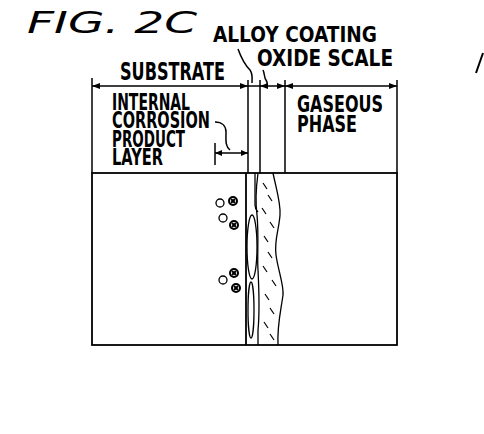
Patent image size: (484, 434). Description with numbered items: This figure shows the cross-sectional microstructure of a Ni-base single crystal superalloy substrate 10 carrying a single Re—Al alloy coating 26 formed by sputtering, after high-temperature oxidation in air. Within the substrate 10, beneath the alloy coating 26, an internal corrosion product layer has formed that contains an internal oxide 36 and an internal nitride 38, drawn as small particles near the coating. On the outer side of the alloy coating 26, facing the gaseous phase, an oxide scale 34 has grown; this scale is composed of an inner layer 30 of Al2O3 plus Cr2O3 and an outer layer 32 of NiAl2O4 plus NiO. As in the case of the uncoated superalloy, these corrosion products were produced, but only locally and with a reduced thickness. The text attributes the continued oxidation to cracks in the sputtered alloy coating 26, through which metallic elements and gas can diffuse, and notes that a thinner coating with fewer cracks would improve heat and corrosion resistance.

The substrate 10 is at (157, 345).
The Re—Al alloy coating 26 is at (268, 243).
The inner layer 30 is at (260, 345).
The outer layer 32 is at (267, 345).
The oxide scale 34 is at (303, 387).
The internal oxide 36 is at (231, 228).
The internal nitride 38 is at (216, 201).